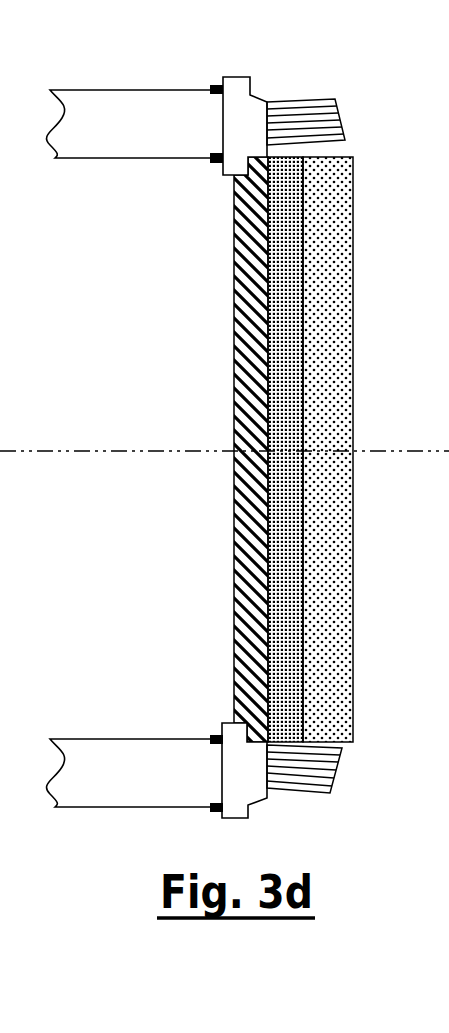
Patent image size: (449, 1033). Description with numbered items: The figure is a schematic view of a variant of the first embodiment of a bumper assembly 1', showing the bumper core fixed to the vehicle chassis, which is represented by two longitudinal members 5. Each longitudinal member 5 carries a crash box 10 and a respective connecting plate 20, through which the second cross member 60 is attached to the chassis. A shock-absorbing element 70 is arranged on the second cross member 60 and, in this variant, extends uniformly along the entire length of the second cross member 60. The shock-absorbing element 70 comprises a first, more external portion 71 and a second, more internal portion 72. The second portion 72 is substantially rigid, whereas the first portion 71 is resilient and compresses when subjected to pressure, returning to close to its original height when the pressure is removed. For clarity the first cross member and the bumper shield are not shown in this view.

The bumper assembly 1' is at (153, 382).
The longitudinal member 5 is at (102, 132).
The crash box 10 is at (305, 113).
The connecting plate 20 is at (236, 160).
The second cross member 60 is at (234, 323).
The shock-absorbing element 70 is at (358, 449).
The first portion 71 is at (337, 410).
The second portion 72 is at (282, 592).